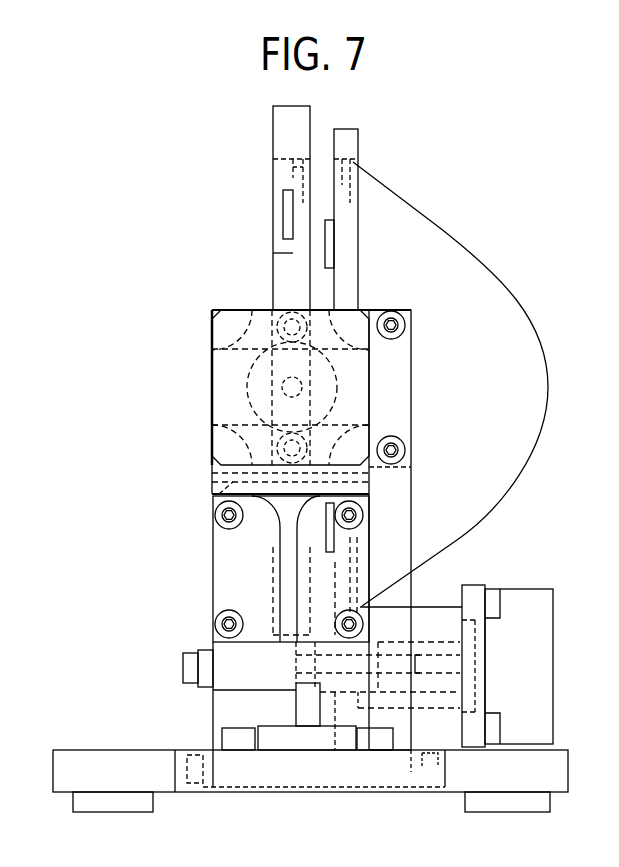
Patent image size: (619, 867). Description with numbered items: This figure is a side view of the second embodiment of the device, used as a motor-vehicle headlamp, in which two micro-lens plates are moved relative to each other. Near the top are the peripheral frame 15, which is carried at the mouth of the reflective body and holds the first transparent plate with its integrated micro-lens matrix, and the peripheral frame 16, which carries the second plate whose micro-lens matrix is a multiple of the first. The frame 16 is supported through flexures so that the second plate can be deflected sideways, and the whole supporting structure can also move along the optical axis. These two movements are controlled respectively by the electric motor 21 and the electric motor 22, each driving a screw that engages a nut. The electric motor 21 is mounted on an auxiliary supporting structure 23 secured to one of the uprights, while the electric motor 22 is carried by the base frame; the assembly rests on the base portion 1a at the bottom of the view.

The base plate 1a is at (157, 777).
The peripheral frame 15 is at (353, 140).
The peripheral frame 16 is at (283, 133).
The electric motor 21 is at (222, 378).
The electric motor 22 is at (547, 620).
The auxiliary supporting structure 23 is at (290, 568).